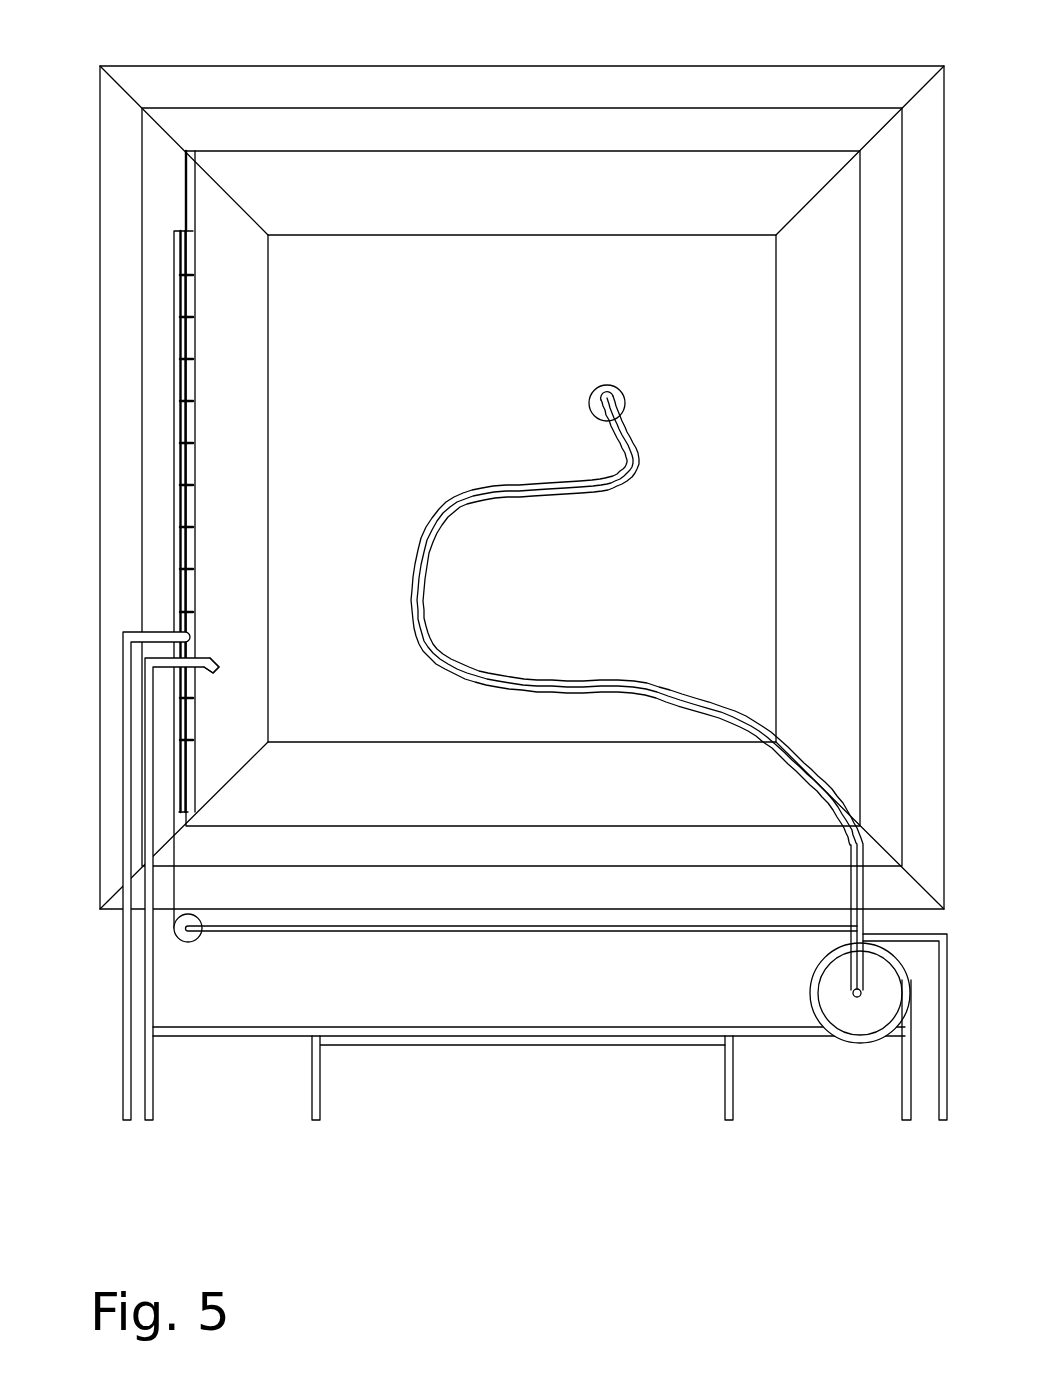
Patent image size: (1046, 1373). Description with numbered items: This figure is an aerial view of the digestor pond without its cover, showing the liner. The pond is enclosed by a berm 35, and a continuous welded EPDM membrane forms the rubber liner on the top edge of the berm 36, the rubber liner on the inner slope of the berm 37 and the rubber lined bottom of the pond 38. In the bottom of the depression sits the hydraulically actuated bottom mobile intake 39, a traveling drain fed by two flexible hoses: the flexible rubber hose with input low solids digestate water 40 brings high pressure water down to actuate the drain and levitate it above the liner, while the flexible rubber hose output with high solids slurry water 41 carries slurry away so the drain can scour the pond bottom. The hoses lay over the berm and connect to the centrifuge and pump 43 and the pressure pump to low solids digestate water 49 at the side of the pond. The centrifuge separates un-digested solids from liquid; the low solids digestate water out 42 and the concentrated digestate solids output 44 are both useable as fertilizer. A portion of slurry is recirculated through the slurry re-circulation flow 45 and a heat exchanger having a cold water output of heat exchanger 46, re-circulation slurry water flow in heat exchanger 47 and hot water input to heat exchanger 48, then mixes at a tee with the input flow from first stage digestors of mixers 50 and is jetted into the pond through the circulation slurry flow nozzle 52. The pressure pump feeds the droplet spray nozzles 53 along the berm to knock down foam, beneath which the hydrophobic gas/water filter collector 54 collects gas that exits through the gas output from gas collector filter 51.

The berm 35 is at (167, 85).
The rubber liner on top edge of berm 36 is at (252, 133).
The rubber liner on inner slope of berm 37 is at (313, 193).
The rubber lined bottom of pond 38 is at (372, 370).
The hydraulically actuated bottom mobile intake 39 is at (595, 386).
The flexible rubber hose with input low solids digestate water 40 is at (632, 430).
The flexible rubber hose output with high solids slurry water 41 is at (642, 455).
The low solids digestate water out 42 is at (943, 1122).
The centrifuge and pump 43 is at (860, 1043).
The concentrated digestate solids output 44 is at (904, 1122).
The slurry re-circulation flow 45 is at (784, 1032).
The cold water output of heat exchanger 46 is at (726, 1122).
The re-circulation slurry water flow in heat exchanger 47 is at (537, 1032).
The hot water input to heat exchanger 48 is at (315, 1122).
The pressure pump to low solids digestate water 49 is at (197, 940).
The input flow from first stage digestors of mixers 50 is at (148, 1122).
The gas output from gas collector filter 51 is at (124, 1122).
The circulation slurry flow nozzle 52 is at (213, 667).
The droplet spray nozzles 53 is at (192, 528).
The hydrophobic gas/water filter collector 54 is at (183, 424).